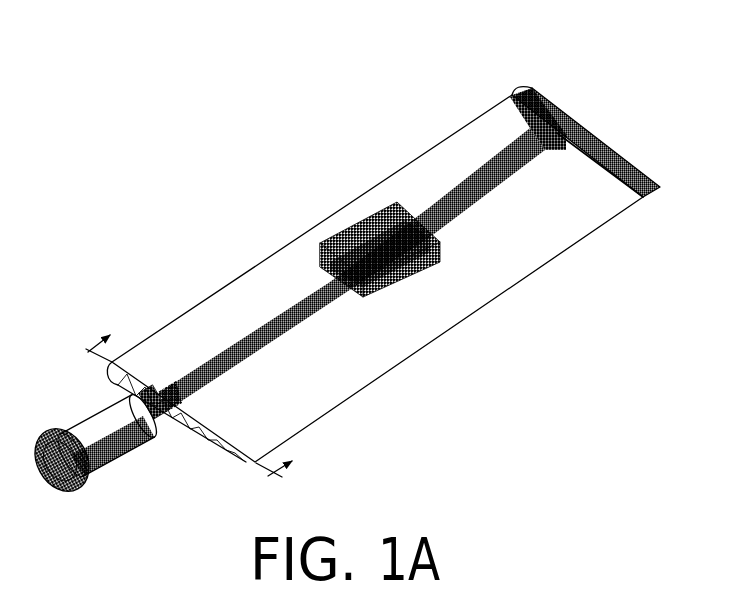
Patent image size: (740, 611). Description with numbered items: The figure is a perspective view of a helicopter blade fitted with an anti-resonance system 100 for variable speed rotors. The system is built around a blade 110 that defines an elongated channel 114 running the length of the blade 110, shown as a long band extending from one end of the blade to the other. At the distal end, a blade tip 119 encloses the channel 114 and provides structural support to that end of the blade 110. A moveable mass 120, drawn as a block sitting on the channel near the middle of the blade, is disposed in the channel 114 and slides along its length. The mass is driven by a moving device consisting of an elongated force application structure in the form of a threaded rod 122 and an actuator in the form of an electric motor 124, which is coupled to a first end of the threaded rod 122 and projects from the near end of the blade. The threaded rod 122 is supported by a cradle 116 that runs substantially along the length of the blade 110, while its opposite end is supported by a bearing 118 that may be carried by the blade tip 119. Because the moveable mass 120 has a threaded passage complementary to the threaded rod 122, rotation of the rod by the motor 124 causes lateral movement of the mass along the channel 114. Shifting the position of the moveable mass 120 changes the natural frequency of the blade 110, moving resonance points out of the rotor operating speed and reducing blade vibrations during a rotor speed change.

The anti-resonance system 100 is at (183, 238).
The blade 110 is at (470, 120).
The elongated channel 114 is at (178, 410).
The cradle 116 is at (163, 410).
The bearing 118 is at (565, 138).
The blade tip 119 is at (542, 101).
The moveable mass 120 is at (392, 210).
The threaded rod 122 is at (139, 398).
The electric motor 124 is at (77, 432).